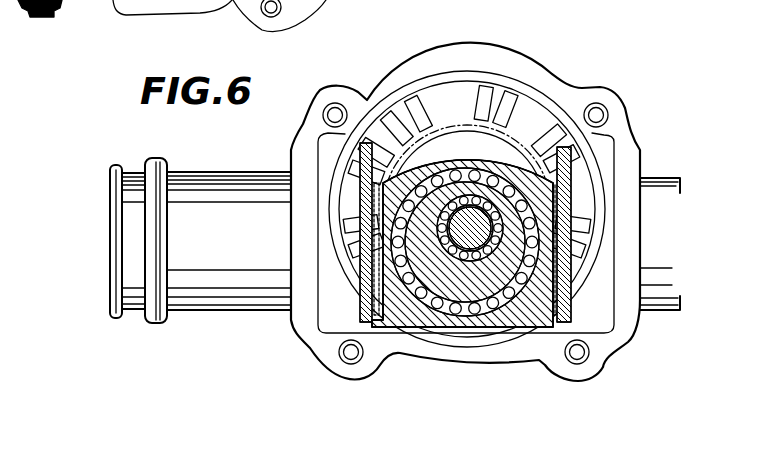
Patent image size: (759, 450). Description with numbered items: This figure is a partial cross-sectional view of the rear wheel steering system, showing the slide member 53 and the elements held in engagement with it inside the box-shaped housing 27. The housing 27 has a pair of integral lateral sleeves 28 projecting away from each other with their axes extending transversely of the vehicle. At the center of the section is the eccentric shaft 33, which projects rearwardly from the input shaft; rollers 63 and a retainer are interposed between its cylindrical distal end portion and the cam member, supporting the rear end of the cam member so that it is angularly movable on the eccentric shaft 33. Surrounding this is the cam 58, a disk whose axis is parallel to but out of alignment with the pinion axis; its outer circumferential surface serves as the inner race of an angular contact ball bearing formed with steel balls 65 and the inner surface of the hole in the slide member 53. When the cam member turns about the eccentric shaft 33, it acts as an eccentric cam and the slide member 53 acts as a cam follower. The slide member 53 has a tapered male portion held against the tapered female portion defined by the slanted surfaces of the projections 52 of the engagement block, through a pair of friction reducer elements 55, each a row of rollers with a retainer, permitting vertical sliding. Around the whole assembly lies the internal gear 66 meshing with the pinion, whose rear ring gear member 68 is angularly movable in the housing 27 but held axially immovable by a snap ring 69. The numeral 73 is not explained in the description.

The housing 27 is at (507, 67).
The lateral sleeves 28 is at (232, 287).
The eccentric shaft 33 is at (466, 243).
The projections 52 is at (363, 203).
The slide member 53 is at (455, 160).
The friction reducer elements 55 is at (363, 250).
The cam 58 is at (474, 270).
The rollers 63 is at (422, 240).
The steel balls 65 is at (461, 163).
The internal gear 66 is at (476, 144).
The rear ring gear member 68 is at (376, 128).
The snap ring 69 is at (141, 0).
The pole piece 73 is at (91, 0).